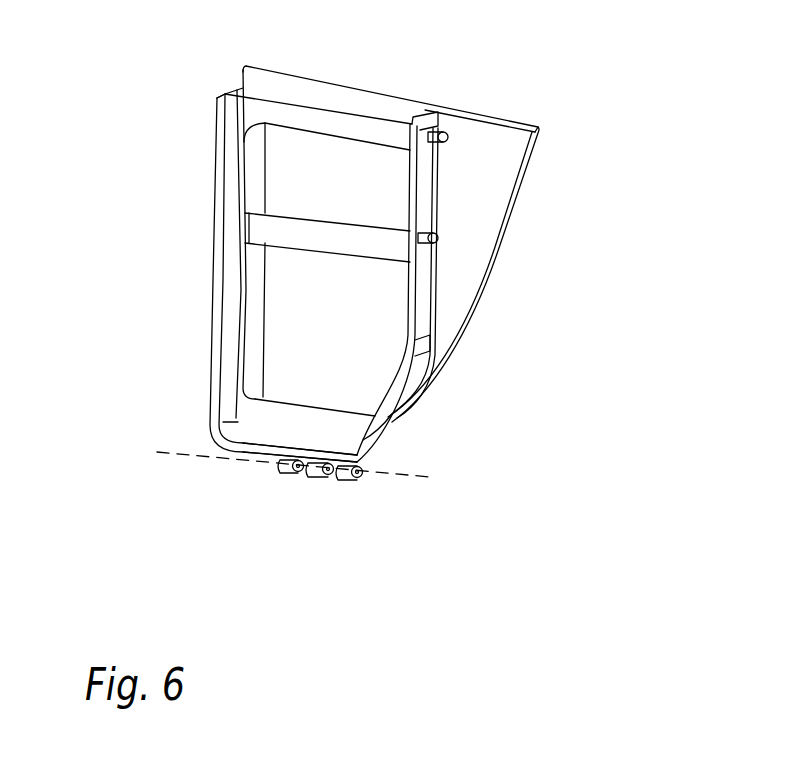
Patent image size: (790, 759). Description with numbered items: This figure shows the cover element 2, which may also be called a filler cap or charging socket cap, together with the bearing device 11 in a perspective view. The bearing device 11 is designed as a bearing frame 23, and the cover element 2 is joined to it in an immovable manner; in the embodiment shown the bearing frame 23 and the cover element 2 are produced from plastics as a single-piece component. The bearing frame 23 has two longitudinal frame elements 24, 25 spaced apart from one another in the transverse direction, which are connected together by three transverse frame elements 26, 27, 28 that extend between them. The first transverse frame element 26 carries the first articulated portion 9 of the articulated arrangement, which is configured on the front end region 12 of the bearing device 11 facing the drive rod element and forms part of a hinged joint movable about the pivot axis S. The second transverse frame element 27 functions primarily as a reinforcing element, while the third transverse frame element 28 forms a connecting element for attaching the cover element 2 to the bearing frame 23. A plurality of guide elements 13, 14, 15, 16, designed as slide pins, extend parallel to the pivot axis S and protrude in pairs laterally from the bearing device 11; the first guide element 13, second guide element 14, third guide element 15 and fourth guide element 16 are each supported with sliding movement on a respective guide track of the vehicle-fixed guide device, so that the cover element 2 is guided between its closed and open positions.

The cover element 2 is at (497, 283).
The first articulated portion 9 is at (403, 515).
The bearing device 11 is at (458, 465).
The front end region 12 is at (372, 483).
The first guide element 13 is at (445, 125).
The second guide element 14 is at (431, 246).
The third guide element 15 is at (227, 92).
The fourth guide element 16 is at (213, 225).
The bearing frame 23 is at (408, 432).
The longitudinal frame element 24 is at (427, 213).
The longitudinal frame element 25 is at (217, 167).
The first transverse frame element 26 is at (253, 452).
The second transverse frame element 27 is at (272, 235).
The third transverse frame element 28 is at (328, 118).
The pivot axis S is at (163, 450).